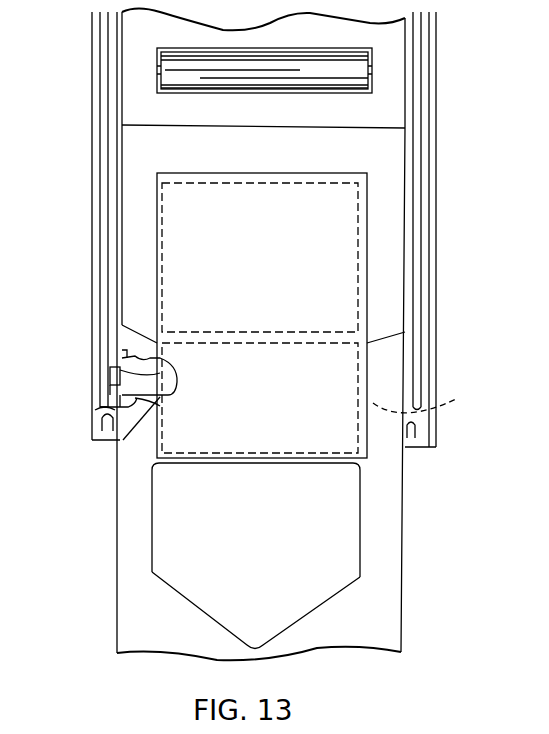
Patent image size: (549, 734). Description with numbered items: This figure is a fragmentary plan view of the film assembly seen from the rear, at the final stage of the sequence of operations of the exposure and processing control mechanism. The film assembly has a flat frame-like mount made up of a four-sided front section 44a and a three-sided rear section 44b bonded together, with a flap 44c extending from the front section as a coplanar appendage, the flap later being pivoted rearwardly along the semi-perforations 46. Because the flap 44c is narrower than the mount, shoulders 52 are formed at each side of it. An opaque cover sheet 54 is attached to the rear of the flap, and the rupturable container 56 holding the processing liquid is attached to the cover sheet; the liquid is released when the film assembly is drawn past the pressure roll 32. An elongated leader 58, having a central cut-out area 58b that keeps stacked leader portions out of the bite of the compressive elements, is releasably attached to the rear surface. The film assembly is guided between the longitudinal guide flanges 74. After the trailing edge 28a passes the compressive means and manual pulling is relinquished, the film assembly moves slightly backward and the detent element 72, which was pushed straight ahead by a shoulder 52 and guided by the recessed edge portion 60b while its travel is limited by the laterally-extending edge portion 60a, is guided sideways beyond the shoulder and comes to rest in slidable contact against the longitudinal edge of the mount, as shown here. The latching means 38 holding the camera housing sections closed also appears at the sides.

The trailing edge 28a is at (387, 127).
The pressure roll 32 is at (282, 72).
The latching means 38 is at (100, 438).
The front section 44a is at (366, 733).
The rear section 44b is at (123, 285).
The flap 44c is at (148, 412).
The semi-perforations 46 is at (160, 406).
The shoulders 52 is at (110, 410).
The opaque cover sheet 54 is at (300, 175).
The rupturable container 56 is at (100, 357).
The leader 58 is at (402, 558).
The central cut-out area 58b is at (200, 610).
The laterally-extending edge portion 60a is at (125, 410).
The recessed edge portion 60b is at (110, 395).
The detent element 72 is at (110, 377).
The longitudinal guide flanges 74 is at (122, 173).